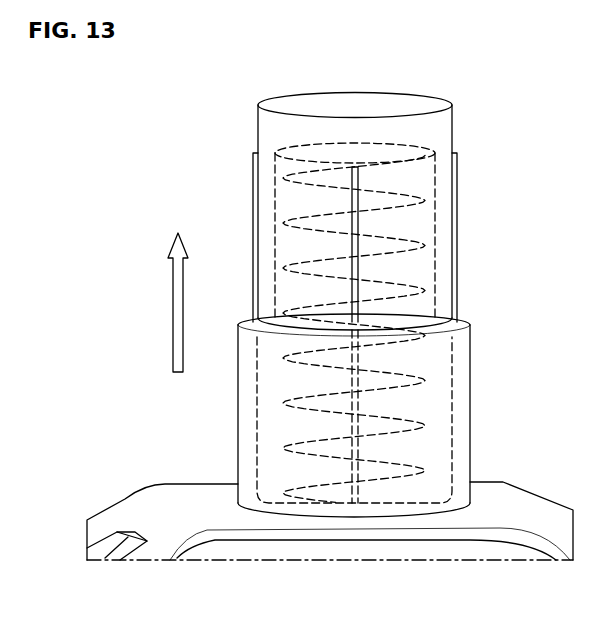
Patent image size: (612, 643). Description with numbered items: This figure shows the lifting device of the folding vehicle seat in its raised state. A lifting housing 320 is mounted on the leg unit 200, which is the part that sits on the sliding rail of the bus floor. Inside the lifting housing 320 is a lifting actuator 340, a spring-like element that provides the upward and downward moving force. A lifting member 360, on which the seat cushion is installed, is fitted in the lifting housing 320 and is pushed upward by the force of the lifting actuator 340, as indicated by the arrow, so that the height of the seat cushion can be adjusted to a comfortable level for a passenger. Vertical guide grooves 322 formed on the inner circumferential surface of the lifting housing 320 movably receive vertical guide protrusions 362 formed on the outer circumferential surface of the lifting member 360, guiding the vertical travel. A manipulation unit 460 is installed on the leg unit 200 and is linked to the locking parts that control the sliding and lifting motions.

The leg unit 200 is at (492, 518).
The lifting housing 320 is at (468, 397).
The vertical guide grooves 322 is at (355, 420).
The lifting actuator 340 is at (415, 243).
The lifting member 360 is at (445, 125).
The vertical guide protrusions 362 is at (455, 197).
The manipulation unit 460 is at (105, 545).